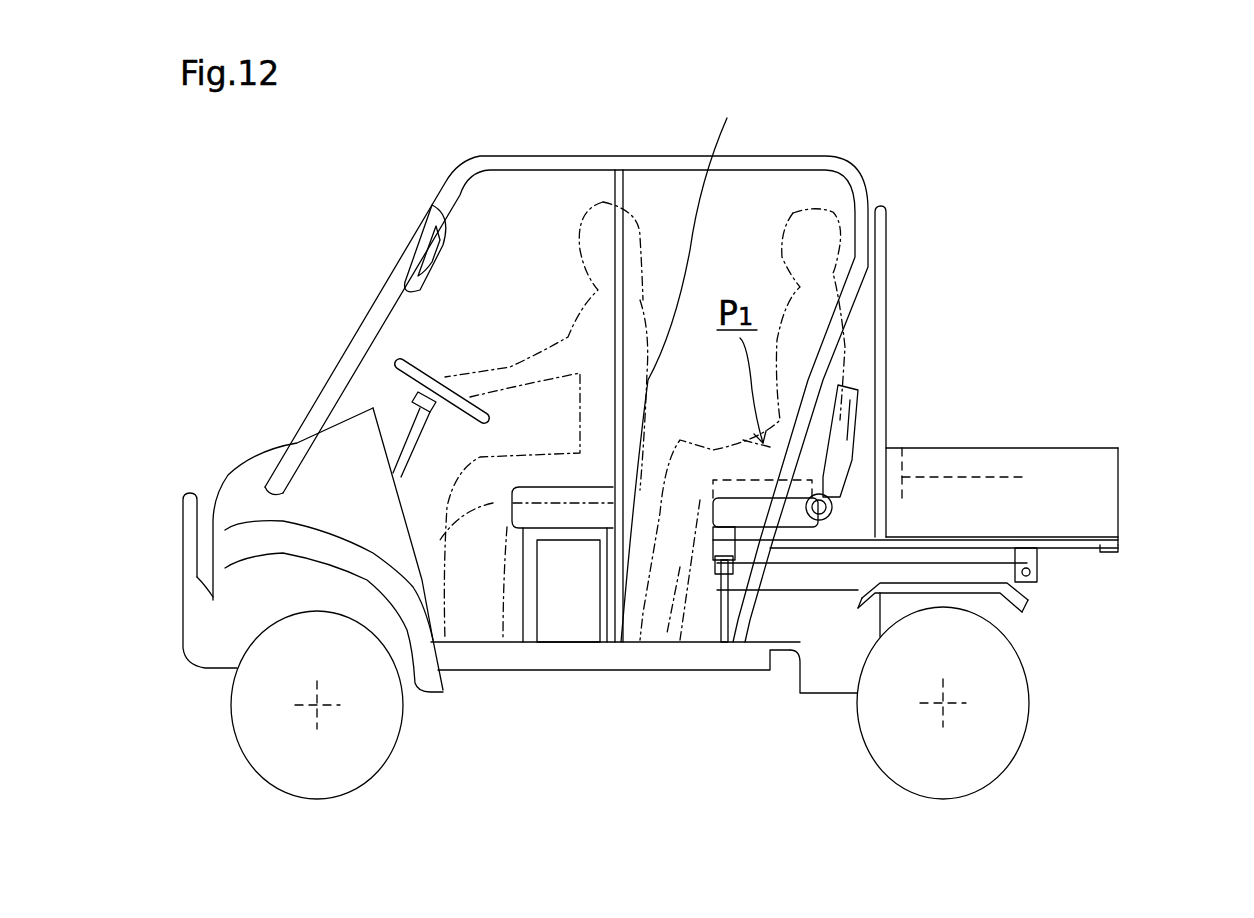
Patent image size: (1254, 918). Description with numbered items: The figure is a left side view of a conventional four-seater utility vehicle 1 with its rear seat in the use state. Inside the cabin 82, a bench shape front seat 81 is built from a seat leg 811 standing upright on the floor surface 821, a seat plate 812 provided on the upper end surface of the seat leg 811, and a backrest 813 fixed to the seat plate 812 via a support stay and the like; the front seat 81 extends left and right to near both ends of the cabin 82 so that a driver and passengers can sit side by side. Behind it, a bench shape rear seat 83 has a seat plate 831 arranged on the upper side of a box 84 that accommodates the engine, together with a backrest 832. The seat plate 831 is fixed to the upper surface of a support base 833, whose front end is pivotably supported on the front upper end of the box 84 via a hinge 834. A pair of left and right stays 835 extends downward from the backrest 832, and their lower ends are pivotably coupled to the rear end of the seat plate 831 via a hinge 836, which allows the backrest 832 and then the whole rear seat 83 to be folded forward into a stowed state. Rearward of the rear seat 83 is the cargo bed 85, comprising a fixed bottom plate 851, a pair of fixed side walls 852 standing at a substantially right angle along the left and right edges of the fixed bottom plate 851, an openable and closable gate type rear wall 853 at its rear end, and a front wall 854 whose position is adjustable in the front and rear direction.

The utility vehicle 1 is at (830, 132).
The front seat 81 is at (487, 673).
The seat leg 811 is at (530, 640).
The seat plate 812 is at (530, 497).
The backrest 813 is at (695, 362).
The cabin 82 is at (440, 316).
The floor surface 821 is at (570, 642).
The rear seat 83 is at (730, 495).
The seat plate 831 is at (780, 520).
The backrest 832 is at (860, 393).
The support base 833 is at (703, 550).
The hinge 834 is at (722, 575).
The stays 835 is at (845, 455).
The hinge 836 is at (835, 505).
The box 84 is at (800, 700).
The cargo bed 85 is at (1095, 432).
The fixed bottom plate 851 is at (1110, 552).
The fixed side walls 852 is at (1055, 448).
The rear wall 853 is at (1120, 490).
The front wall 854 is at (997, 472).